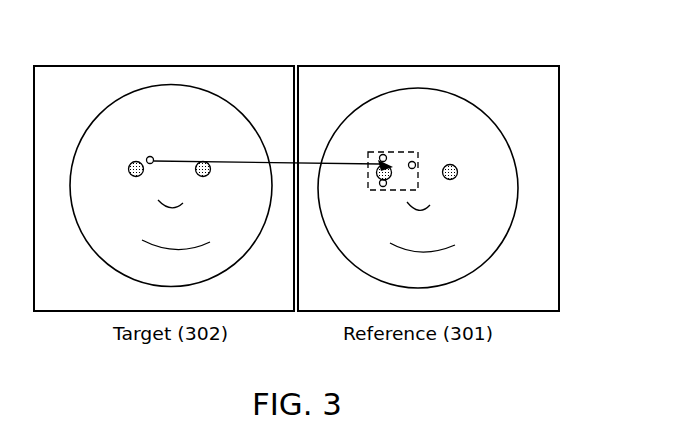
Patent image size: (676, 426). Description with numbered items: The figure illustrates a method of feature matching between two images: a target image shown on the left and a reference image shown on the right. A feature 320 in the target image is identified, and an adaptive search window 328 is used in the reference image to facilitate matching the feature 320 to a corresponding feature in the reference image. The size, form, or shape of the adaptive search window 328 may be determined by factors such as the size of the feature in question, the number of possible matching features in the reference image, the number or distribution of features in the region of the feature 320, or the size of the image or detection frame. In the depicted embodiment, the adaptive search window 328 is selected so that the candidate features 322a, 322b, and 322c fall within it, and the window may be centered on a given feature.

The feature 320 is at (148, 157).
The feature 322a is at (382, 154).
The feature 322b is at (413, 162).
The feature 322c is at (386, 184).
The adaptive search window 328 is at (418, 172).